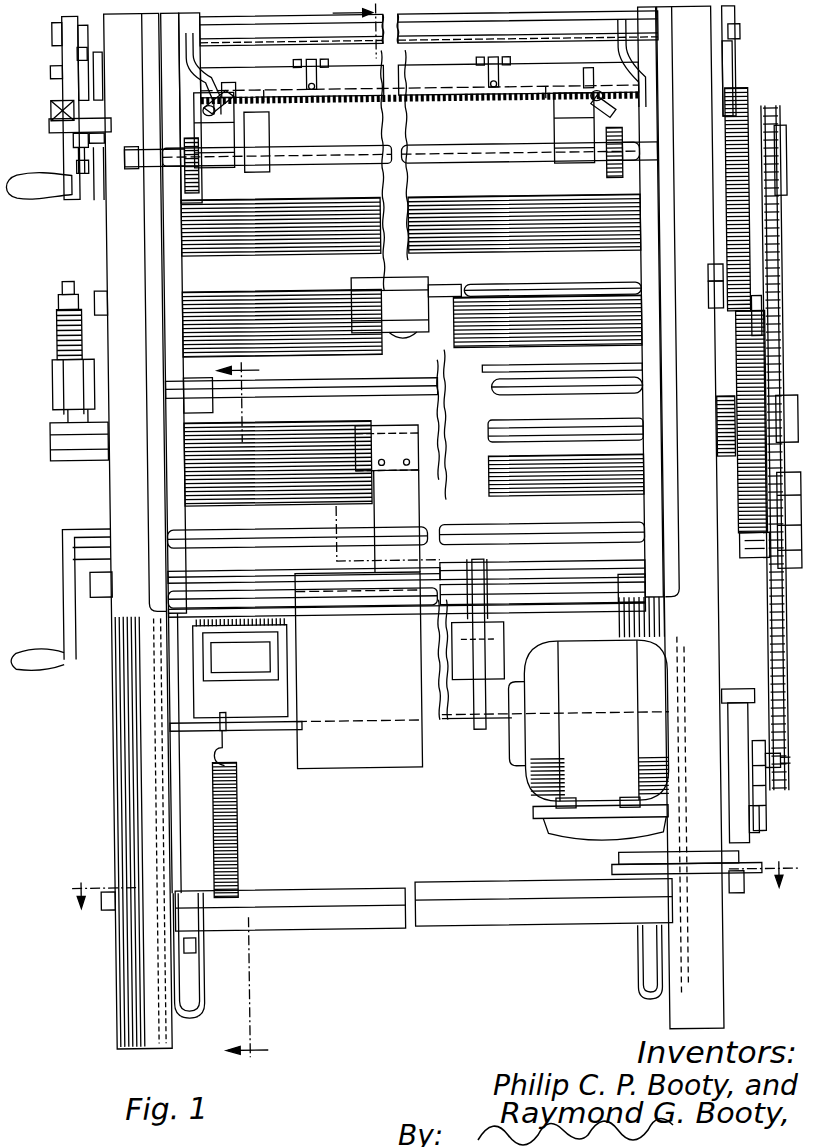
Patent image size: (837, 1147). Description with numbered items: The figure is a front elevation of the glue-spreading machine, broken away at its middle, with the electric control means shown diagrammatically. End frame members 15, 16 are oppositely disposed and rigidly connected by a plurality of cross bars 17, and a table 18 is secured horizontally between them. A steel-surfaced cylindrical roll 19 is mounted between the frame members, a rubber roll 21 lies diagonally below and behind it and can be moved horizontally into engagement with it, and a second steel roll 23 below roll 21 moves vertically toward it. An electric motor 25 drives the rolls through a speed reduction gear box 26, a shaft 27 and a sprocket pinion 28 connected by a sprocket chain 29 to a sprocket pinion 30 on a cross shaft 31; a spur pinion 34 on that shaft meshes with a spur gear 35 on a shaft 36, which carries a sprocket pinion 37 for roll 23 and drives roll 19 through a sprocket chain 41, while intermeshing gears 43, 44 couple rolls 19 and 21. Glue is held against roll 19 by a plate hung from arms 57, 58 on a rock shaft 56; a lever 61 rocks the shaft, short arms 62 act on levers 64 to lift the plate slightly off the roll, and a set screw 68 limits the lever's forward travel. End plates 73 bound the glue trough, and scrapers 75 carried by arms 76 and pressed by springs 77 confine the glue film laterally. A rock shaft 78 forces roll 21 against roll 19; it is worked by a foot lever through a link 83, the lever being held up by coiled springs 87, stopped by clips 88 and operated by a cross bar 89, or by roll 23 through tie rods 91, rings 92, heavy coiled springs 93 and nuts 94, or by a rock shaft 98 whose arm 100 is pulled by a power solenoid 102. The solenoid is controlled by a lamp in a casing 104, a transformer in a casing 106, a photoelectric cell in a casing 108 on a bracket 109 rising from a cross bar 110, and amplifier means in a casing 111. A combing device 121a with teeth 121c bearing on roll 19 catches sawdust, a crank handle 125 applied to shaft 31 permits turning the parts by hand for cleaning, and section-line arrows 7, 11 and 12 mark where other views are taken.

The top rail 7 is at (429, 30).
The section line 11 is at (434, 896).
The section line 12 is at (249, 714).
The end frame member 15 is at (111, 748).
The end frame member 16 is at (718, 982).
The cross bars 17 is at (440, 147).
The table 18 is at (512, 368).
The cylindrical roll 19 is at (443, 100).
The rubber roll 21 is at (295, 340).
The second cylindrical steel roll 23 is at (502, 488).
The electric motor 25 is at (510, 760).
The speed reduction gear box 26 is at (726, 745).
The shaft 27 is at (773, 758).
The sprocket pinion 28 is at (781, 788).
The sprocket chain 29 is at (776, 645).
The sprocket pinion 30 is at (780, 575).
The cross shaft 31 is at (610, 530).
The spur pinion 34 is at (755, 565).
The spur gear 35 is at (739, 475).
The shaft 36 is at (490, 445).
The sprocket pinion 37 is at (719, 433).
The sprocket chain 41 is at (712, 303).
The gear 43 is at (754, 95).
The gear 44 is at (712, 275).
The rock shaft 56 is at (432, 33).
The arm 57 is at (216, 68).
The arm 58 is at (620, 55).
The lever 61 is at (84, 46).
The short arm 62 is at (66, 28).
The lever 64 is at (100, 80).
The set screw 68 is at (57, 108).
The end plate 73 is at (245, 85).
The scrapers 75 is at (225, 98).
The arms 76 is at (270, 130).
The springs 77 is at (204, 180).
The rock shaft 78 is at (97, 455).
The link 83 is at (168, 803).
The coiled springs 87 is at (238, 842).
The clips 88 is at (200, 982).
The cross bar 89 is at (535, 920).
The tie rods 91 is at (68, 277).
The rings 92 is at (52, 448).
The heavy coiled springs 93 is at (60, 330).
The nuts 94 is at (62, 292).
The rock shaft 98 is at (585, 585).
The arm 100 is at (565, 590).
The power solenoid 102 is at (505, 636).
The casing 104 is at (378, 283).
The casing 106 is at (270, 712).
The casing 108 is at (352, 458).
The bracket 109 is at (382, 514).
The cross bar 110 is at (457, 720).
The casing 111 is at (335, 765).
The combing device 121a is at (380, 84).
The teeth 121c is at (296, 100).
The crank handle 125 is at (68, 592).